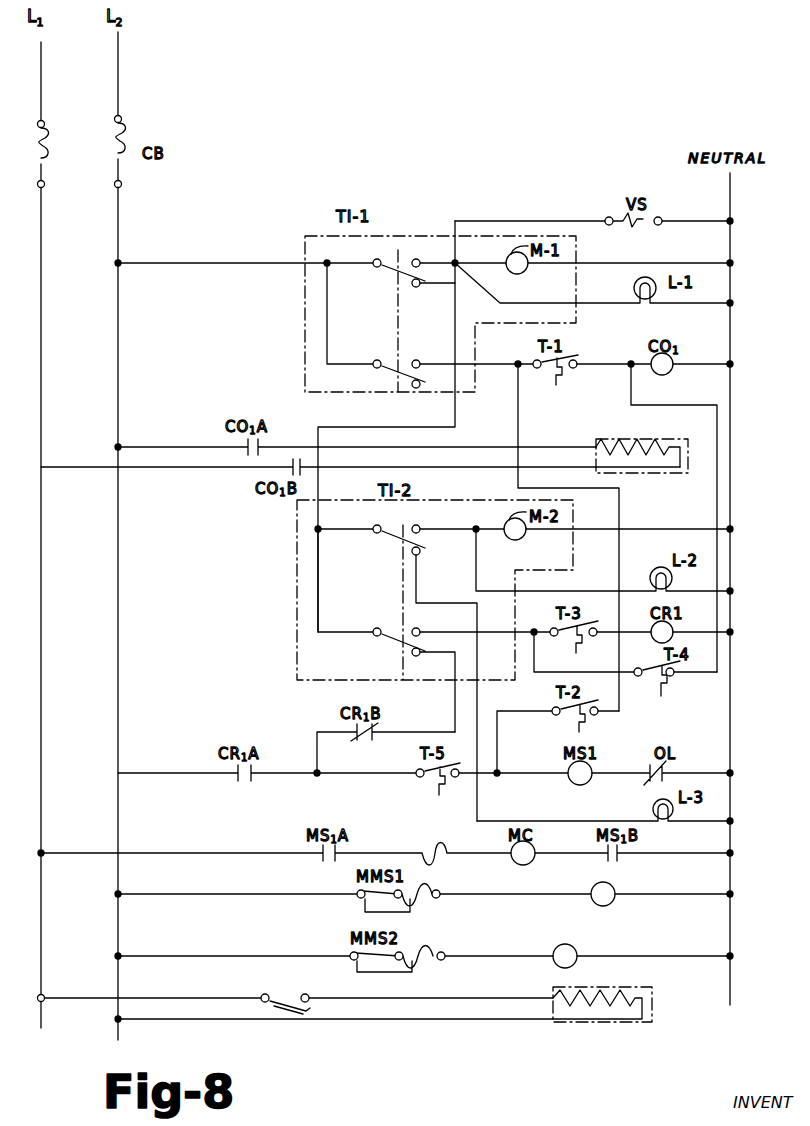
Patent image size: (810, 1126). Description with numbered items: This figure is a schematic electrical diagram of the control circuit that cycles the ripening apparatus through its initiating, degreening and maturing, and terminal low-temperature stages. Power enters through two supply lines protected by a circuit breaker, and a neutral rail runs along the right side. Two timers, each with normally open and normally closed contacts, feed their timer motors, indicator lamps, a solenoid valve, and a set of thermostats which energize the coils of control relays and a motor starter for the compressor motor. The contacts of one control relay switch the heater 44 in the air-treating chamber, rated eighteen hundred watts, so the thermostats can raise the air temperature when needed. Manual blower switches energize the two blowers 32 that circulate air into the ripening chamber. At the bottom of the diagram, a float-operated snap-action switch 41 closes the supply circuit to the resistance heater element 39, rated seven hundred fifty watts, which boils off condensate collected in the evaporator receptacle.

The heater 44 is at (606, 439).
The electrical resistance heater element 39 is at (596, 989).
The snap-action switch 41 is at (283, 1000).
The blowers 32 is at (612, 886).